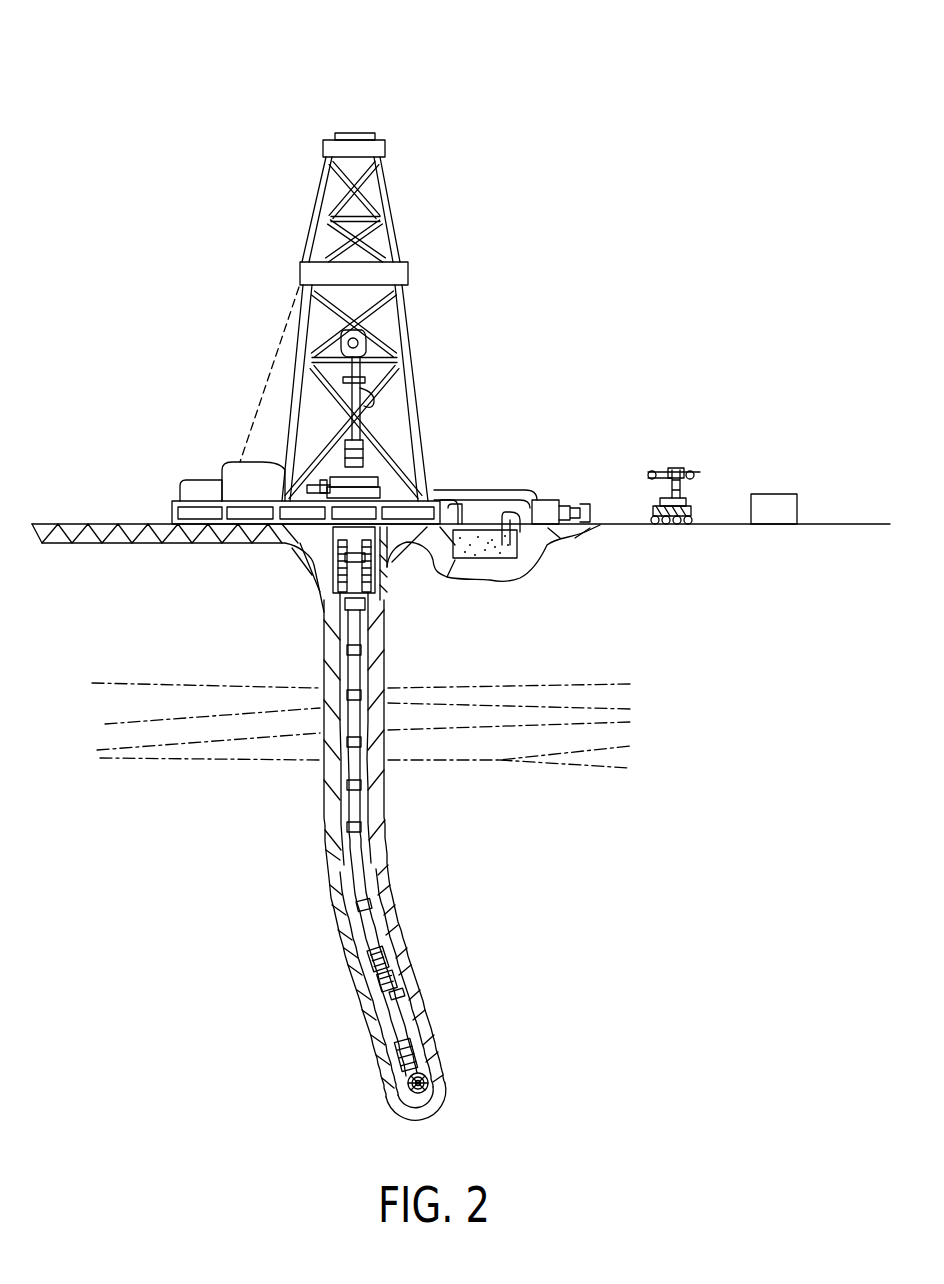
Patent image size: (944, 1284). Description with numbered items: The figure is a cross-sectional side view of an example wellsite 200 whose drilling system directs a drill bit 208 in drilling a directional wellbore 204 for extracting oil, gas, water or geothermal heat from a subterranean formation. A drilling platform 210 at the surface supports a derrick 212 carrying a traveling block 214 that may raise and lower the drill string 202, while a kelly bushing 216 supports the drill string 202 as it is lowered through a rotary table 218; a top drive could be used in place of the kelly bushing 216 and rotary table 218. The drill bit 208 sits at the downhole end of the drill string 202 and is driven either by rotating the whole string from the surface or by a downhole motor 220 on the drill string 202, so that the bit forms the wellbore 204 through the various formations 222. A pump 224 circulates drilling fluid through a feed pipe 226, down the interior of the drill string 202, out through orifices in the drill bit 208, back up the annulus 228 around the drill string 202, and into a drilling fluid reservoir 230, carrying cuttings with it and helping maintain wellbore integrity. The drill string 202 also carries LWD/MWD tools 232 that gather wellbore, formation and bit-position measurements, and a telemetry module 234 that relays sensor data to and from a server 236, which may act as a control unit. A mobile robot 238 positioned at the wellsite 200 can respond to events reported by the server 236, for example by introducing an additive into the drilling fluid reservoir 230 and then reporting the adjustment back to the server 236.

The wellsite 200 is at (426, 93).
The drill string 202 is at (332, 630).
The wellbore 204 is at (372, 672).
The drill bit 208 is at (428, 1088).
The drilling platform 210 is at (172, 508).
The derrick 212 is at (385, 228).
The traveling block 214 is at (363, 345).
The kelly bushing 216 is at (370, 410).
The rotary table 218 is at (375, 490).
The downhole motor 220 is at (425, 1008).
The formations 222 is at (642, 676).
The pump 224 is at (548, 500).
The feed pipe 226 is at (500, 490).
The annulus 228 is at (345, 802).
The drilling fluid reservoir 230 is at (483, 560).
The LWD/MWD tools 232 is at (382, 996).
The telemetry module 234 is at (380, 966).
The server 236 is at (775, 494).
The mobile robot 238 is at (677, 470).